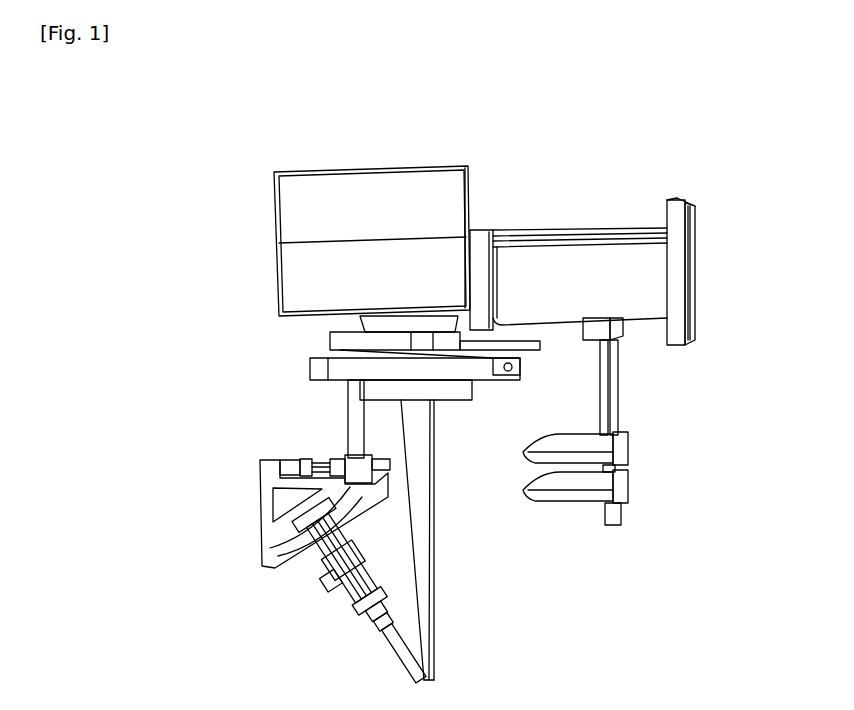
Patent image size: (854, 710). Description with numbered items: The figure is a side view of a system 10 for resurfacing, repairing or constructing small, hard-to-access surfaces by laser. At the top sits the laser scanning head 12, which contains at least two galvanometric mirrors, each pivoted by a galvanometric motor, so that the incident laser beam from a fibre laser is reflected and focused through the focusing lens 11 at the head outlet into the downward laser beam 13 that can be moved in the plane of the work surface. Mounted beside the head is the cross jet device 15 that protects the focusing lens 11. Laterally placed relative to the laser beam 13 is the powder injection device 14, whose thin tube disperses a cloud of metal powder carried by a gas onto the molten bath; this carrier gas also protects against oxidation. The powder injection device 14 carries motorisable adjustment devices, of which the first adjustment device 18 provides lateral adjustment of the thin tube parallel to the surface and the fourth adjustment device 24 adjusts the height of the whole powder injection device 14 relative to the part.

The system 10 is at (672, 150).
The focusing lens 11 is at (443, 390).
The laser scanning head 12 is at (437, 167).
The laser beam 13 is at (427, 558).
The powder injection device 14 is at (313, 607).
The cross jet device 15 is at (613, 452).
The first adjustment device 18 is at (288, 452).
The fourth adjustment device 24 is at (340, 407).